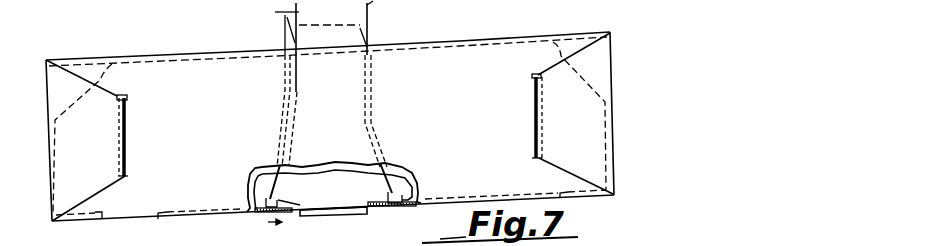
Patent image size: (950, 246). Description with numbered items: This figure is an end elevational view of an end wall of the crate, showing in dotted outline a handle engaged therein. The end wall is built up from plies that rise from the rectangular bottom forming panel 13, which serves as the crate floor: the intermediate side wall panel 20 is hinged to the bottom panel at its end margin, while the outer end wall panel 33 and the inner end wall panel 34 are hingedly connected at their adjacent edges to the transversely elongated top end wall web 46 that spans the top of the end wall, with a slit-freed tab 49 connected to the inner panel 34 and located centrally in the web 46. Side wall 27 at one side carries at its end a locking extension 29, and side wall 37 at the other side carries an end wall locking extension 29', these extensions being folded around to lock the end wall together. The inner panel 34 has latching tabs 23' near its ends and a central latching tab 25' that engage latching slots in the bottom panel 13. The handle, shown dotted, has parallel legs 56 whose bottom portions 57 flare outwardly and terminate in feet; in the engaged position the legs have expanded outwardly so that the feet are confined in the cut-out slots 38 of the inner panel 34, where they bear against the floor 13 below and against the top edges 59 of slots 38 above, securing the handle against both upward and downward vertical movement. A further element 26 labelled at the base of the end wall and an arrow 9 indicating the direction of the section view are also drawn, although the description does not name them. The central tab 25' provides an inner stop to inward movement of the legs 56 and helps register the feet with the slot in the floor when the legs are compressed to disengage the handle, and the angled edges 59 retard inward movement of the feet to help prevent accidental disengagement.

The top end wall web 46 is at (168, 52).
The outer end wall panel 33 is at (495, 118).
The side wall 27 is at (49, 167).
The side wall 37 is at (615, 141).
The latching tab 23' is at (333, 207).
The bottom forming panel 13 is at (456, 206).
The locking extension 29 is at (87, 140).
The end wall locking extension 29' is at (592, 139).
The slit-freed tab 49 is at (353, 21).
The handle leg 56 is at (367, 80).
The bottom portion of handle leg 57 is at (375, 143).
The top edge of slot 59 is at (383, 186).
The intermediate side wall panel 20 is at (242, 190).
The inner end wall panel 34 is at (267, 183).
The slot 38 is at (370, 203).
The right gasket 26 is at (371, 215).
The latching tab 25' is at (333, 224).
The direction arrow 9 is at (285, 215).